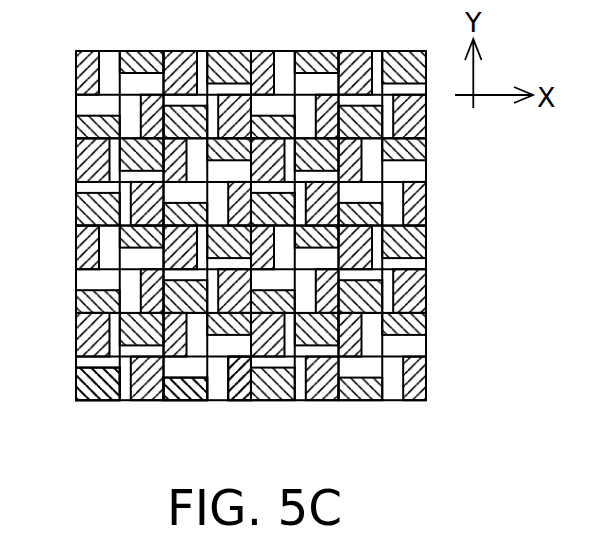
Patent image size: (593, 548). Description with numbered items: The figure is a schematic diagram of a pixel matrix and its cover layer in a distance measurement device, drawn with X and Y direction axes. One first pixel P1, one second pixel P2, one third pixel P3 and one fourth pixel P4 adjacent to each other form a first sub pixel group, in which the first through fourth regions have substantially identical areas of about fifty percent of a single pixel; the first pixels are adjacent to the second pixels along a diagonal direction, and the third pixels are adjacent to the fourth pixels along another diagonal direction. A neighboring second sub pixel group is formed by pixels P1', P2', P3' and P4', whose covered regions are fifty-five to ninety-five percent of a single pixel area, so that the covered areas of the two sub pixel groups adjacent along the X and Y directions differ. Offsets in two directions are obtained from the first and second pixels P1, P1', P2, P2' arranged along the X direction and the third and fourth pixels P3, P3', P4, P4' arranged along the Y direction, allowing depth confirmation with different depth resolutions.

The first pixel P1 is at (98, 206).
The third pixel P3 is at (142, 179).
The first pixel P1' is at (186, 206).
The third pixel P3' is at (229, 206).
The second pixel P2 is at (404, 248).
The second pixel P2' is at (142, 400).
The fourth pixel P4 is at (228, 117).
The fourth pixel P4' is at (228, 379).